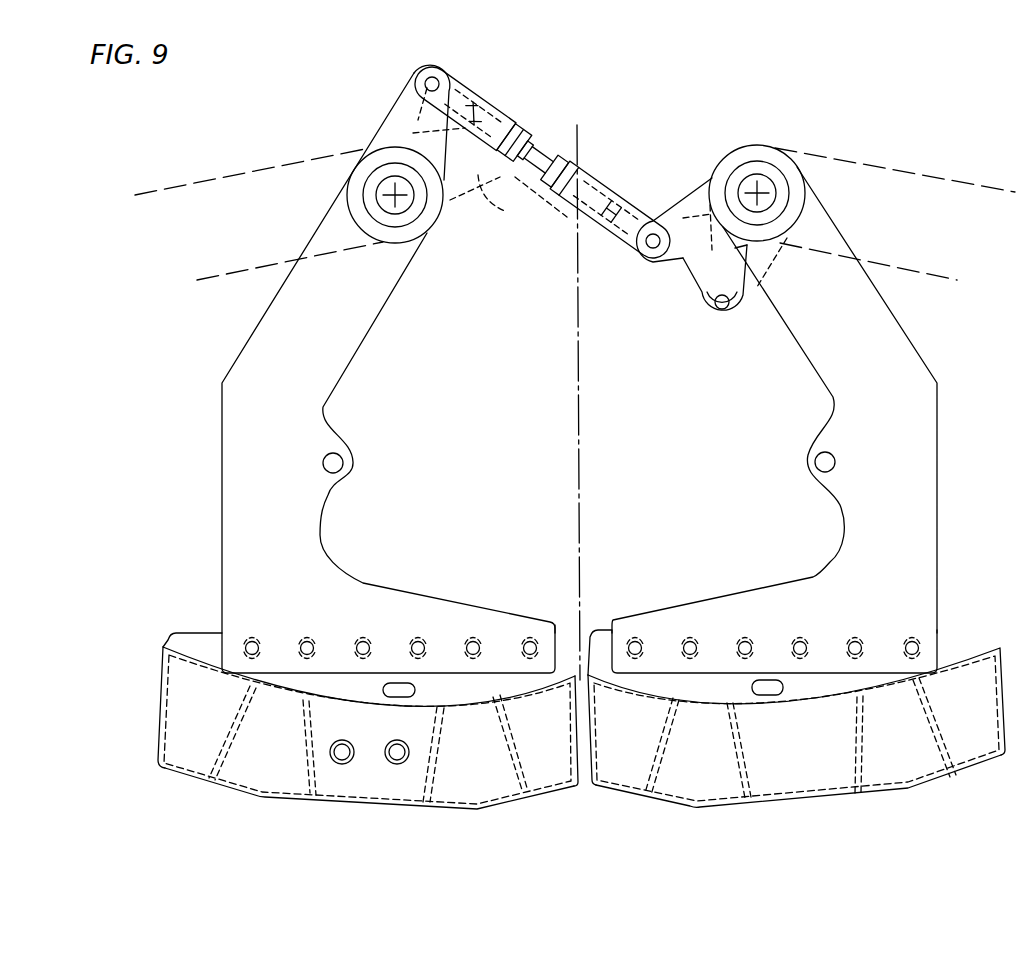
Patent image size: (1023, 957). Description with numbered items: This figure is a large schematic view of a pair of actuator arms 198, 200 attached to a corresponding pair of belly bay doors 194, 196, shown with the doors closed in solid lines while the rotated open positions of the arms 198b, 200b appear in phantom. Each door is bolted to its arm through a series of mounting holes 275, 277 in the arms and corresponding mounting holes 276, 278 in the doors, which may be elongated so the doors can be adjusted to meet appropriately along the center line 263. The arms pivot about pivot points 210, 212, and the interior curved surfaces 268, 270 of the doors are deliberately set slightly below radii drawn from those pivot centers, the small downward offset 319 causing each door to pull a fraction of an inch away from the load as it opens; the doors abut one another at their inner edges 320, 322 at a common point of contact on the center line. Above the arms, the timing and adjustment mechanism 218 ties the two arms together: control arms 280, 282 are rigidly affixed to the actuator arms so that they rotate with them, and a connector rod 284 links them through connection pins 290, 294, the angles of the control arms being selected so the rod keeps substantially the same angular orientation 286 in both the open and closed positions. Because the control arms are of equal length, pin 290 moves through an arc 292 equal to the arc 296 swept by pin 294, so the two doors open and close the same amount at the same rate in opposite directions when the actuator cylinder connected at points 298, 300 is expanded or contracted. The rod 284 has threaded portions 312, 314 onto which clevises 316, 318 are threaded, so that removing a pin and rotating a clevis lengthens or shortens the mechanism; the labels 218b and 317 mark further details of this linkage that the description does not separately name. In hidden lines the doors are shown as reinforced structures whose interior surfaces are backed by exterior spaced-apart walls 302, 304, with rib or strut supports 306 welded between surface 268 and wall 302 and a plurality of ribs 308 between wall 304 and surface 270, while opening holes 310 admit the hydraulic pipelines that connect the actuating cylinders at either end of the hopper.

The belly bay door 194 is at (796, 740).
The belly bay door 196 is at (346, 745).
The actuator arm 198 is at (928, 530).
The actuator arm in open position 198b is at (984, 181).
The actuator arm 200 is at (232, 507).
The actuator arm in open position 200b is at (318, 156).
The arm pivot point 210 is at (757, 193).
The arm pivot point 212 is at (395, 195).
The timing and adjustment mechanism 218 is at (547, 142).
The bell crank arm 218b is at (695, 330).
The center line 263 is at (580, 532).
The interior arcuate surface 268 is at (713, 702).
The interior arcuate surface 270 is at (460, 700).
The mounting holes 275 is at (913, 634).
The mounting holes 276 is at (857, 628).
The mounting holes 277 is at (251, 640).
The mounting holes 278 is at (307, 627).
The control arm 280 is at (701, 187).
The control arm 282 is at (393, 113).
The connector rod 284 is at (543, 197).
The angular orientation 286 is at (552, 128).
The connection pin 290 is at (650, 249).
The arc 292 is at (683, 283).
The connection pin 294 is at (425, 80).
The arc 296 is at (478, 88).
The cylinder connection point 298 is at (818, 470).
The cylinder connection point 300 is at (340, 470).
The exterior wall 302 is at (828, 800).
The exterior wall 304 is at (293, 798).
The rib or strut supports 306 is at (847, 763).
The ribs 308 is at (307, 762).
The opening holes 310 is at (397, 757).
The threaded portion 312 is at (583, 142).
The threaded portion 314 is at (543, 122).
The clevis 316 is at (650, 207).
The flange 317 is at (588, 164).
The clevis 318 is at (454, 68).
The downward offset 319 is at (517, 168).
The inner edge 320 is at (590, 677).
The inner edge 322 is at (576, 680).